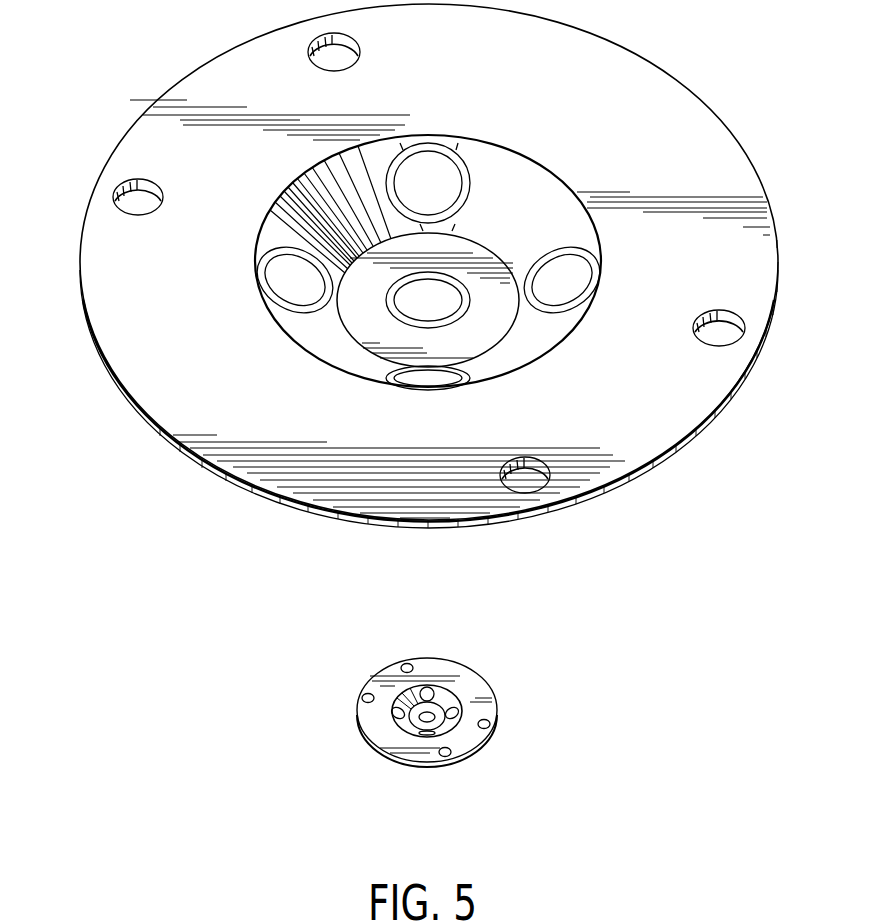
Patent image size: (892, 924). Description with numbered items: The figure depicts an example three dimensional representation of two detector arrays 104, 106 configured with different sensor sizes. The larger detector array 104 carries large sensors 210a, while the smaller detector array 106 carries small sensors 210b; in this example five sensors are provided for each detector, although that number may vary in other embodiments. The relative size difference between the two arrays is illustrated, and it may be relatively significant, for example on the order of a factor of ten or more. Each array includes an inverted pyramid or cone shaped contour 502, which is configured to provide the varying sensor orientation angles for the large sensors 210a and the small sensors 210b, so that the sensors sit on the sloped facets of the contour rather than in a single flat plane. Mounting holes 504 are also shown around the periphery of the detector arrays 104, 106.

The detector array 104 is at (245, 530).
The detector array 106 is at (342, 740).
The large sensors 210a is at (291, 286).
The small sensors 210b is at (668, 657).
The inverted pyramid or cone shaped contour 502 is at (675, 154).
The mounting holes 504 is at (787, 561).